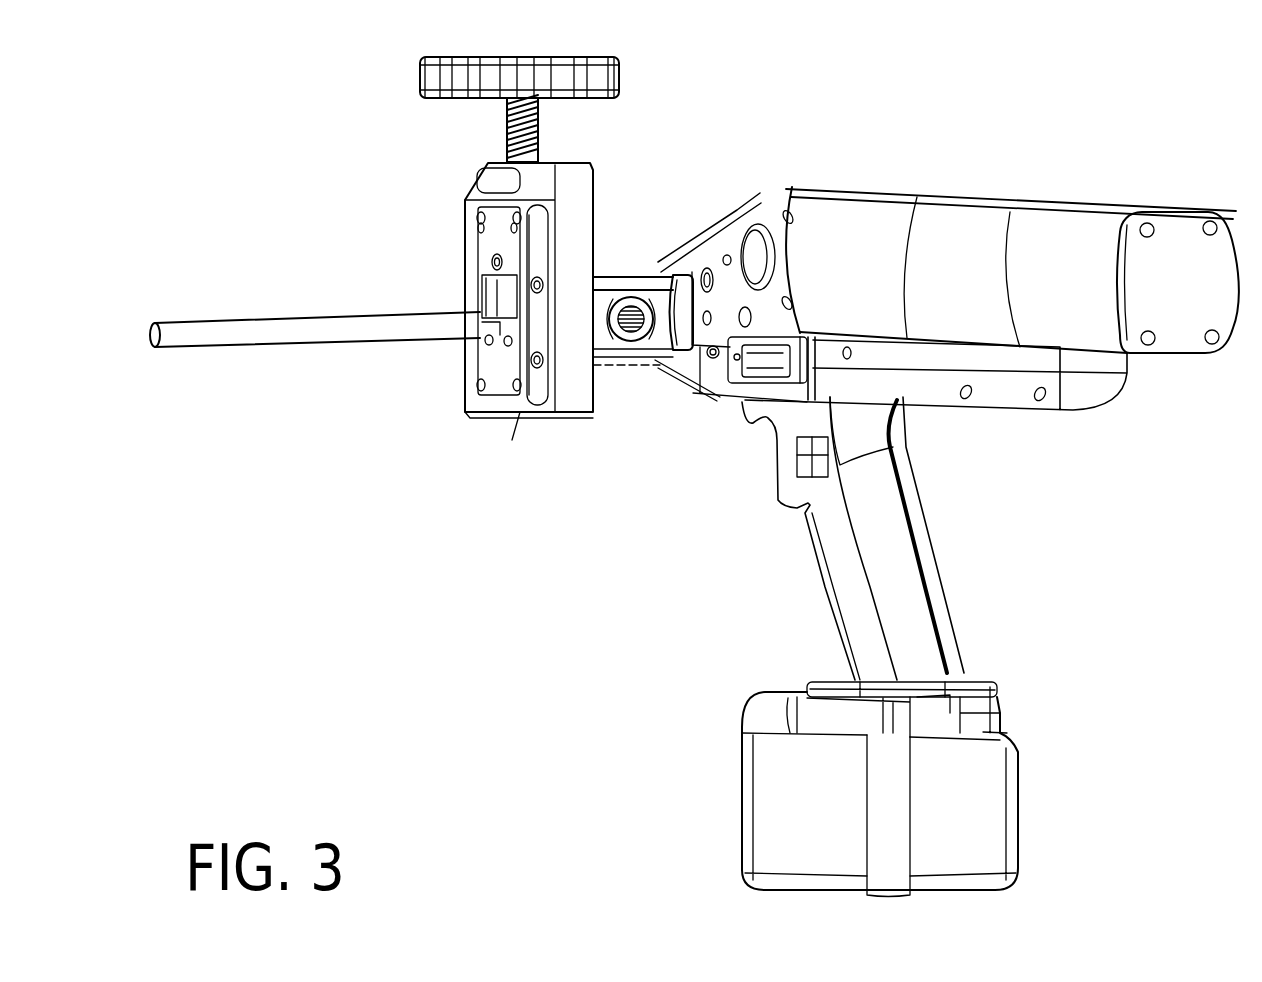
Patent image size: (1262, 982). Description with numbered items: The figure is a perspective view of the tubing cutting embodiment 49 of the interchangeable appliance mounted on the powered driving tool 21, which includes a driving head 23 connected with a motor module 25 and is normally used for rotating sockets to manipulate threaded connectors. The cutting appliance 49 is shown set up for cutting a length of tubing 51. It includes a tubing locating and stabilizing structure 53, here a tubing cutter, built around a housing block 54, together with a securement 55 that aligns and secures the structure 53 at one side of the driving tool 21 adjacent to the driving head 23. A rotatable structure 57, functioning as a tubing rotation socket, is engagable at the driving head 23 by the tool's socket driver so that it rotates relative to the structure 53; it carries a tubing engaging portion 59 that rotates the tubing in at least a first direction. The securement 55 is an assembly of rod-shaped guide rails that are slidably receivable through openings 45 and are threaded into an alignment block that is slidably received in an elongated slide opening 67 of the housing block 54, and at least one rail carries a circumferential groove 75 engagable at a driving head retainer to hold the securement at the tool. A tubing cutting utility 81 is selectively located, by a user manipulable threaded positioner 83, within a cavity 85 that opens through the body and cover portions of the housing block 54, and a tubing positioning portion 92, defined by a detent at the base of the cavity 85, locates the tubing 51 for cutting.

The powered driving tool 21 is at (922, 185).
The driving head 23 is at (765, 210).
The motor module 25 is at (948, 220).
The openings 45 is at (707, 268).
The tubing cutting embodiment 49 is at (585, 428).
The tubing 51 is at (285, 332).
The tubing locating and stabilizing structure 53 is at (585, 187).
The housing block 54 is at (468, 405).
The securement 55 is at (520, 400).
The rotatable structure 57 is at (672, 360).
The tubing engaging portion 59 is at (640, 373).
The elongated slide opening 67 is at (547, 227).
The circumferential groove 75 is at (637, 332).
The tubing cutting utility 81 is at (488, 228).
The user manipulable threaded positioner 83 is at (505, 119).
The cavity 85 is at (497, 300).
The tubing positioning portion 92 is at (493, 352).